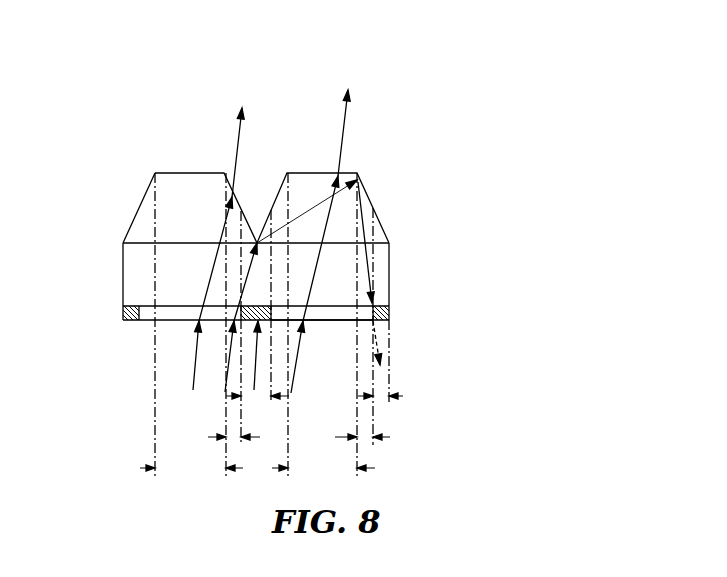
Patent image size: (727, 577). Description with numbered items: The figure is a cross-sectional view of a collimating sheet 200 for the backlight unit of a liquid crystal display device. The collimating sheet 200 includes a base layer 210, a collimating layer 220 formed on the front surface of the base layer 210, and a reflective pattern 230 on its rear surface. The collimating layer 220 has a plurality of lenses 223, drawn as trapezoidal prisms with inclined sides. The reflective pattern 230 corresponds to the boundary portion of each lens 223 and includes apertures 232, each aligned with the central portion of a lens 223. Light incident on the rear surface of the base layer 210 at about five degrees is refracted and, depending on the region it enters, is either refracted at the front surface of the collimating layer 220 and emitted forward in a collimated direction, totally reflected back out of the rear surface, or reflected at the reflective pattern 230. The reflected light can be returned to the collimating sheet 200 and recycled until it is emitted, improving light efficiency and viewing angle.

The collimating sheet 200 is at (466, 82).
The base layer 210 is at (389, 276).
The collimating layer 220 is at (258, 192).
The lens 223 is at (143, 219).
The reflective pattern 230 is at (398, 303).
The aperture 232 is at (324, 322).